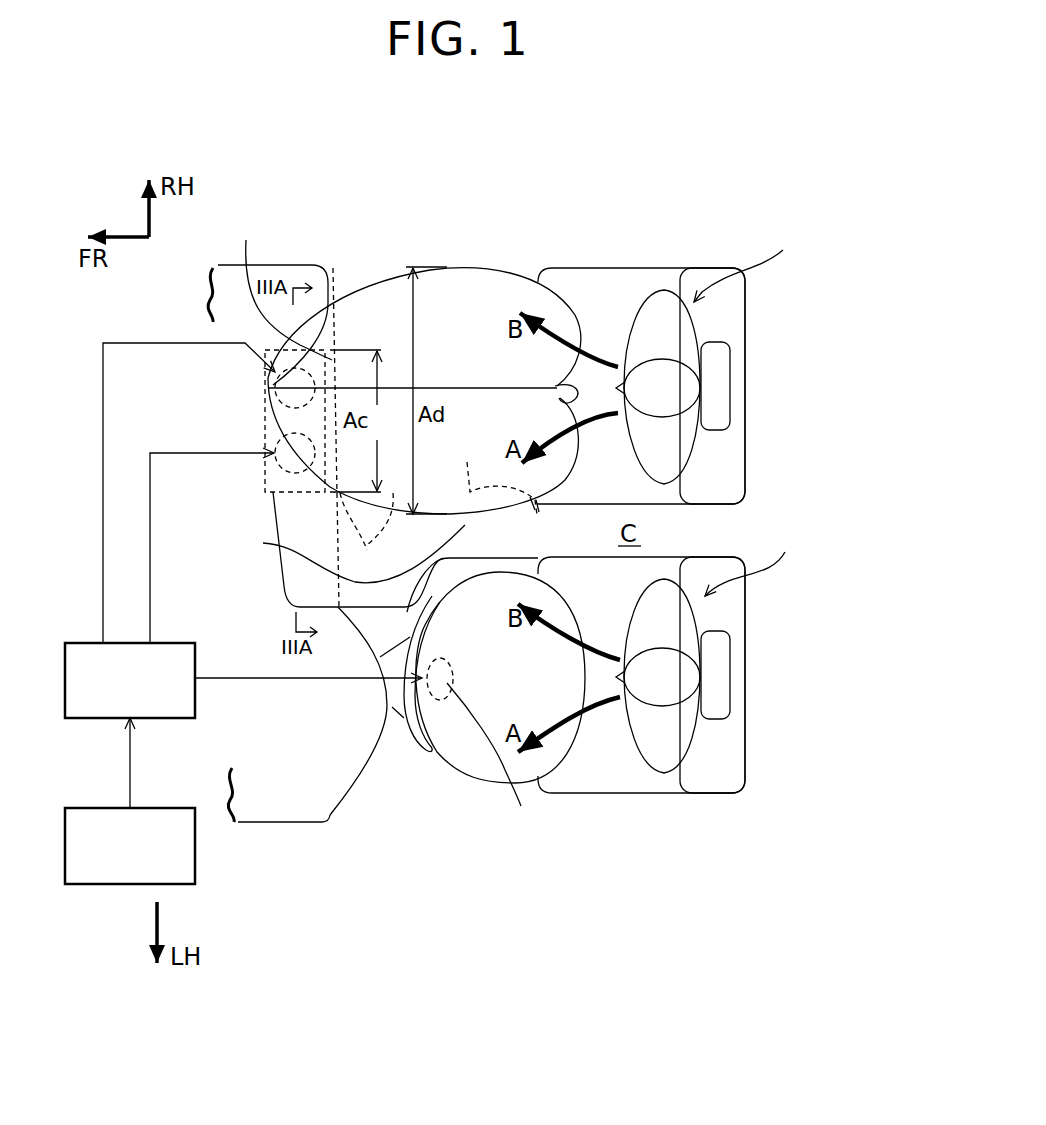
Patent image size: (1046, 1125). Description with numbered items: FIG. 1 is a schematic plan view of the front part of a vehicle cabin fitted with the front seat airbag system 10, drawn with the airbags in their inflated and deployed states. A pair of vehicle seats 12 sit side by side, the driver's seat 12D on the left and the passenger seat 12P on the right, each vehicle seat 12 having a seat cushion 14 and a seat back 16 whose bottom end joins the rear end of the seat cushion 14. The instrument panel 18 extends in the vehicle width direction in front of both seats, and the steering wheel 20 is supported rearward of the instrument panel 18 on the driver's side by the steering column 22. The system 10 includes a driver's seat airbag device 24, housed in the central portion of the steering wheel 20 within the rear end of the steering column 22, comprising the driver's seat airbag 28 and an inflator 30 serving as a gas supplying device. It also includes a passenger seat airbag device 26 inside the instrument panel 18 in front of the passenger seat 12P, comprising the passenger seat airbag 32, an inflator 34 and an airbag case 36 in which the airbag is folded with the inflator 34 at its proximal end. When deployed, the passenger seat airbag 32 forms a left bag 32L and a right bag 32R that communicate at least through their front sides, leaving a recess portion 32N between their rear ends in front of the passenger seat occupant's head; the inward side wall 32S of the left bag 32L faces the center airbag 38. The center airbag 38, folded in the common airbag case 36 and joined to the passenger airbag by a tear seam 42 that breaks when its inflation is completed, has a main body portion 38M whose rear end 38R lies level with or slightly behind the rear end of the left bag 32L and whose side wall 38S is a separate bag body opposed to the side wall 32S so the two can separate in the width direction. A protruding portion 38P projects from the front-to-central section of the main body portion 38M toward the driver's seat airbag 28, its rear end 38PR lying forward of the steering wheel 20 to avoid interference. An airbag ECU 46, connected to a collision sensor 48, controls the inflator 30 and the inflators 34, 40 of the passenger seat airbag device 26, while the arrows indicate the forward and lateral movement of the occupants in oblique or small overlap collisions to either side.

The front seat airbag system 10 is at (600, 206).
The vehicle seat 12 is at (701, 519).
The passenger seat 12P is at (768, 304).
The driver's seat 12D is at (767, 605).
The seat cushion 14 is at (630, 268).
The seat back 16 is at (697, 270).
The instrument panel 18 is at (336, 797).
The steering wheel 20 is at (428, 752).
The steering column 22 is at (393, 706).
The driver's seat airbag device 24 is at (511, 747).
The passenger seat airbag device 26 is at (523, 250).
The driver's seat airbag 28 is at (473, 765).
The inflator 30 is at (485, 868).
The passenger seat airbag 32 is at (424, 352).
The right bag 32R is at (381, 276).
The left bag 32L is at (460, 385).
The recess portion 32N is at (557, 392).
The side wall 32S is at (472, 516).
The inflator 34 is at (333, 268).
The airbag case 36 is at (246, 240).
The center airbag 38 is at (210, 631).
The main body portion 38M is at (336, 554).
The protruding portion 38P is at (292, 588).
The rear end 38R is at (588, 504).
The side wall 38S is at (536, 506).
The rear end 38PR is at (460, 577).
The inflator 40 is at (278, 468).
The tear seam 42 is at (438, 509).
The airbag ECU 46 is at (84, 641).
The collision sensor 48 is at (108, 886).